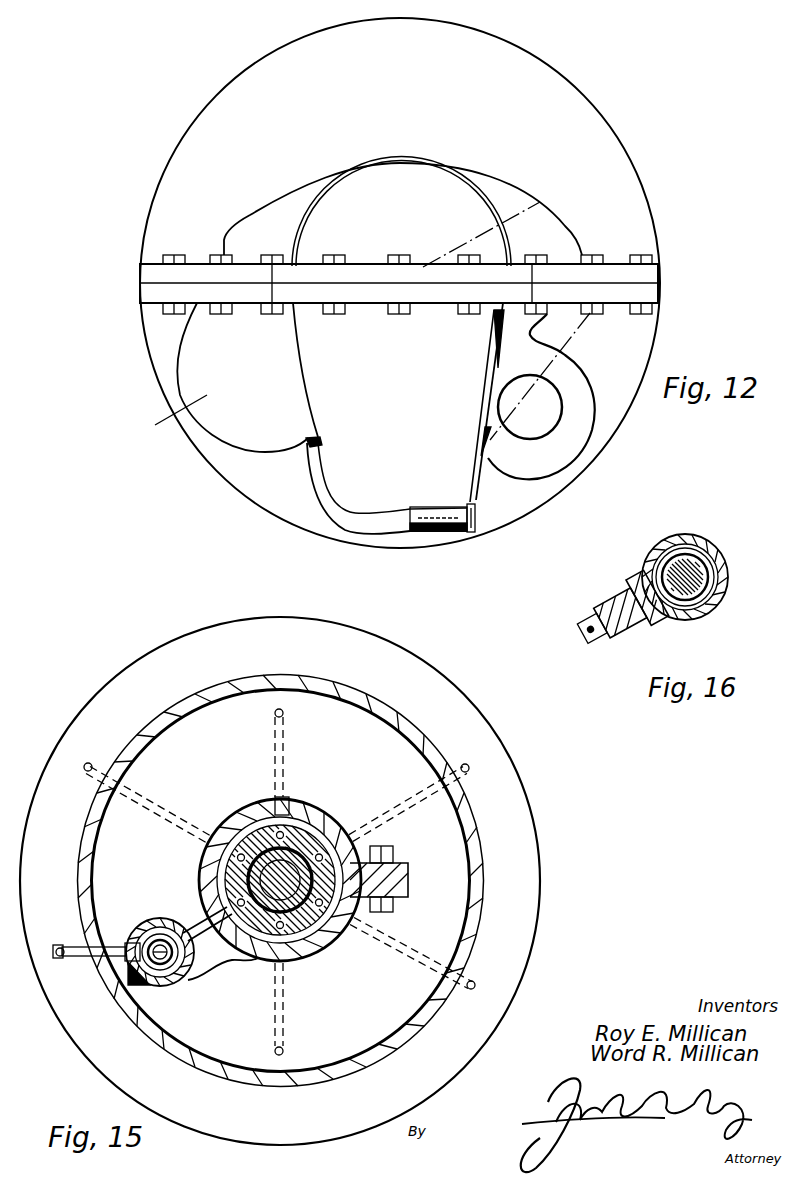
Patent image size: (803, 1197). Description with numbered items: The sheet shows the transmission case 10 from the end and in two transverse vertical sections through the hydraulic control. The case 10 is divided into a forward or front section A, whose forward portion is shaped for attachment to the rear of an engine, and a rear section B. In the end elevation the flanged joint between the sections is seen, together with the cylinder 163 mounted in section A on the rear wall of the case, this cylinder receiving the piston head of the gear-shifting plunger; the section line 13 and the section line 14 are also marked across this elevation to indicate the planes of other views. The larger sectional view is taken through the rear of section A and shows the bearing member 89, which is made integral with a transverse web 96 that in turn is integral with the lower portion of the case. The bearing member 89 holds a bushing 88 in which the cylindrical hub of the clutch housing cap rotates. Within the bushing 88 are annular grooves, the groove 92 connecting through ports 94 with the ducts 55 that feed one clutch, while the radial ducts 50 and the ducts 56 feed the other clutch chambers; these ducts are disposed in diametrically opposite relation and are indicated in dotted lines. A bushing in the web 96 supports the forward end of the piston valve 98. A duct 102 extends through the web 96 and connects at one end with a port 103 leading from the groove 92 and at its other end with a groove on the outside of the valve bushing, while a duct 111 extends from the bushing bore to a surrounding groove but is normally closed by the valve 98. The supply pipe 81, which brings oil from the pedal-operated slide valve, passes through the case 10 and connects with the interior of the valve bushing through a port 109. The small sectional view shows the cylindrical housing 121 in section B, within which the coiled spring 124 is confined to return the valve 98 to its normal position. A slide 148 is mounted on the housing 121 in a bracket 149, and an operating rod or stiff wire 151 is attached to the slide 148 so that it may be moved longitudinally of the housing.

In FIG. 12, the case 10 is at (603, 103).
In FIG. 15, the case 10 is at (484, 888).
In FIG. 12, the section line 13- 13 is at (563, 310).
In FIG. 12, the section line 14- 14 is at (158, 462).
In FIG. 12, the cylinder 163 is at (585, 426).
In FIG. 15, the radial ducts 50 is at (284, 748).
In FIG. 15, the ducts 55 is at (420, 810).
In FIG. 15, the ducts 56 is at (238, 803).
In FIG. 15, the supply pipe 81 is at (72, 960).
In FIG. 15, the bushing 88 is at (362, 852).
In FIG. 15, the bearing member 89 is at (284, 806).
In FIG. 15, the annular groove 92 is at (332, 947).
In FIG. 15, the ports 94 is at (322, 835).
In FIG. 15, the transverse web 96 is at (222, 880).
In FIG. 15, the piston valve 98 is at (198, 978).
In FIG. 16, the piston valve 98 is at (700, 575).
In FIG. 15, the duct 102 is at (200, 958).
In FIG. 15, the port 103 is at (243, 962).
In FIG. 15, the port 109 is at (138, 935).
In FIG. 15, the duct 111 is at (140, 982).
In FIG. 16, the cylindrical housing 121 is at (716, 548).
In FIG. 16, the coiled spring 124 is at (706, 585).
In FIG. 16, the slide 148 is at (633, 636).
In FIG. 16, the bracket 149 is at (637, 587).
In FIG. 16, the operating rod 151 is at (598, 642).
In FIG. 12, the front section A is at (193, 142).
In FIG. 15, the front section A is at (508, 796).
In FIG. 12, the rear section B is at (375, 194).